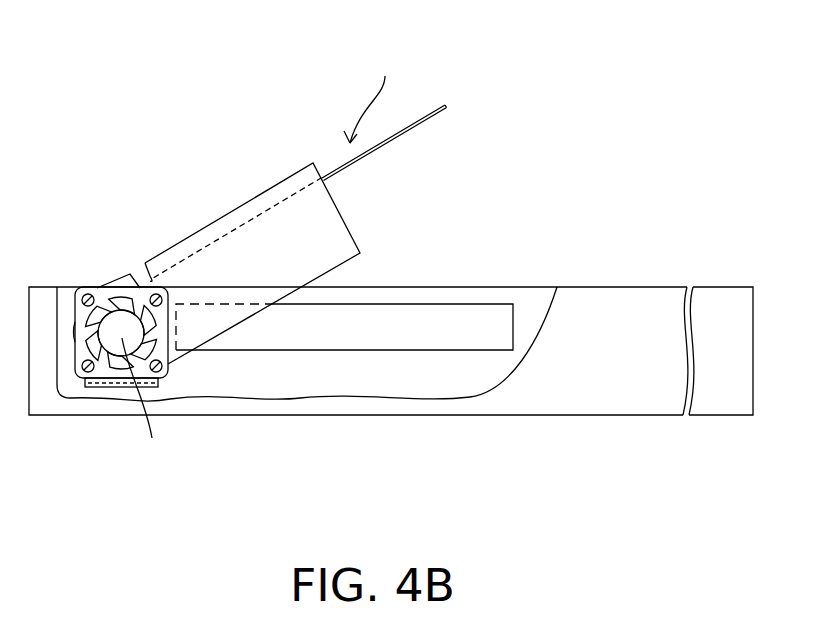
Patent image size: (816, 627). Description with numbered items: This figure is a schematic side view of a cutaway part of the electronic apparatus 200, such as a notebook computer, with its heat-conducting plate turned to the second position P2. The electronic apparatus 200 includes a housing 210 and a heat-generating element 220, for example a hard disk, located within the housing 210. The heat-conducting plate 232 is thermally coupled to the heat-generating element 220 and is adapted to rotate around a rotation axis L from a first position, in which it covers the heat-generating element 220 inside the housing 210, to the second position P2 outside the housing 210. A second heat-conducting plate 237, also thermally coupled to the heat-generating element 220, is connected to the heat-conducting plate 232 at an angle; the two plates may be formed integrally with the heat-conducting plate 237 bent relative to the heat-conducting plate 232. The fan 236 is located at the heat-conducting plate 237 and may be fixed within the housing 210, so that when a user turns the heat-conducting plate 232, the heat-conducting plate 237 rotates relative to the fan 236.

The electronic apparatus 200 is at (772, 471).
The housing 210 is at (610, 307).
The heat-generating element 220 is at (483, 313).
The heat-conducting plate 232 is at (446, 105).
The fan 236 is at (98, 295).
The heat-conducting plate 237 is at (333, 221).
The rotation axis L is at (141, 407).
The second position P2 is at (371, 93).